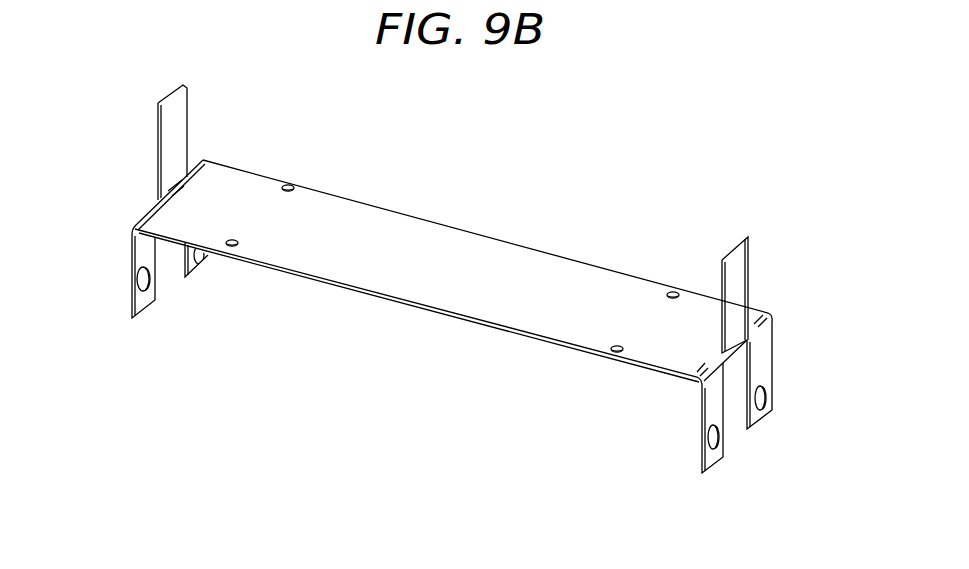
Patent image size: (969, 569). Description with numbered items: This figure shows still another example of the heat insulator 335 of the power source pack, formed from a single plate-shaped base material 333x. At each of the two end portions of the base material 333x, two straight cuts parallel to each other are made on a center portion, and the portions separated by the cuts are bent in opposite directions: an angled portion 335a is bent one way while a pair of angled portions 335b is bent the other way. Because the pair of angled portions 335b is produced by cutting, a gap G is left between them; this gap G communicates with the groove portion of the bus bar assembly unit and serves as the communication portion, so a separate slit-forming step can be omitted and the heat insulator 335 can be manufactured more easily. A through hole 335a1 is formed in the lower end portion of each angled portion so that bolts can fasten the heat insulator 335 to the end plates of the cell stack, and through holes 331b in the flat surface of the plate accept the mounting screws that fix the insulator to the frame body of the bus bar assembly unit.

The heat insulator 335 is at (597, 110).
The base material 333x is at (453, 245).
The angled portion 335a is at (188, 137).
The angled portion 335b is at (195, 276).
The through hole 335a1 is at (137, 277).
The through hole 331b is at (292, 183).
The gap G is at (172, 258).